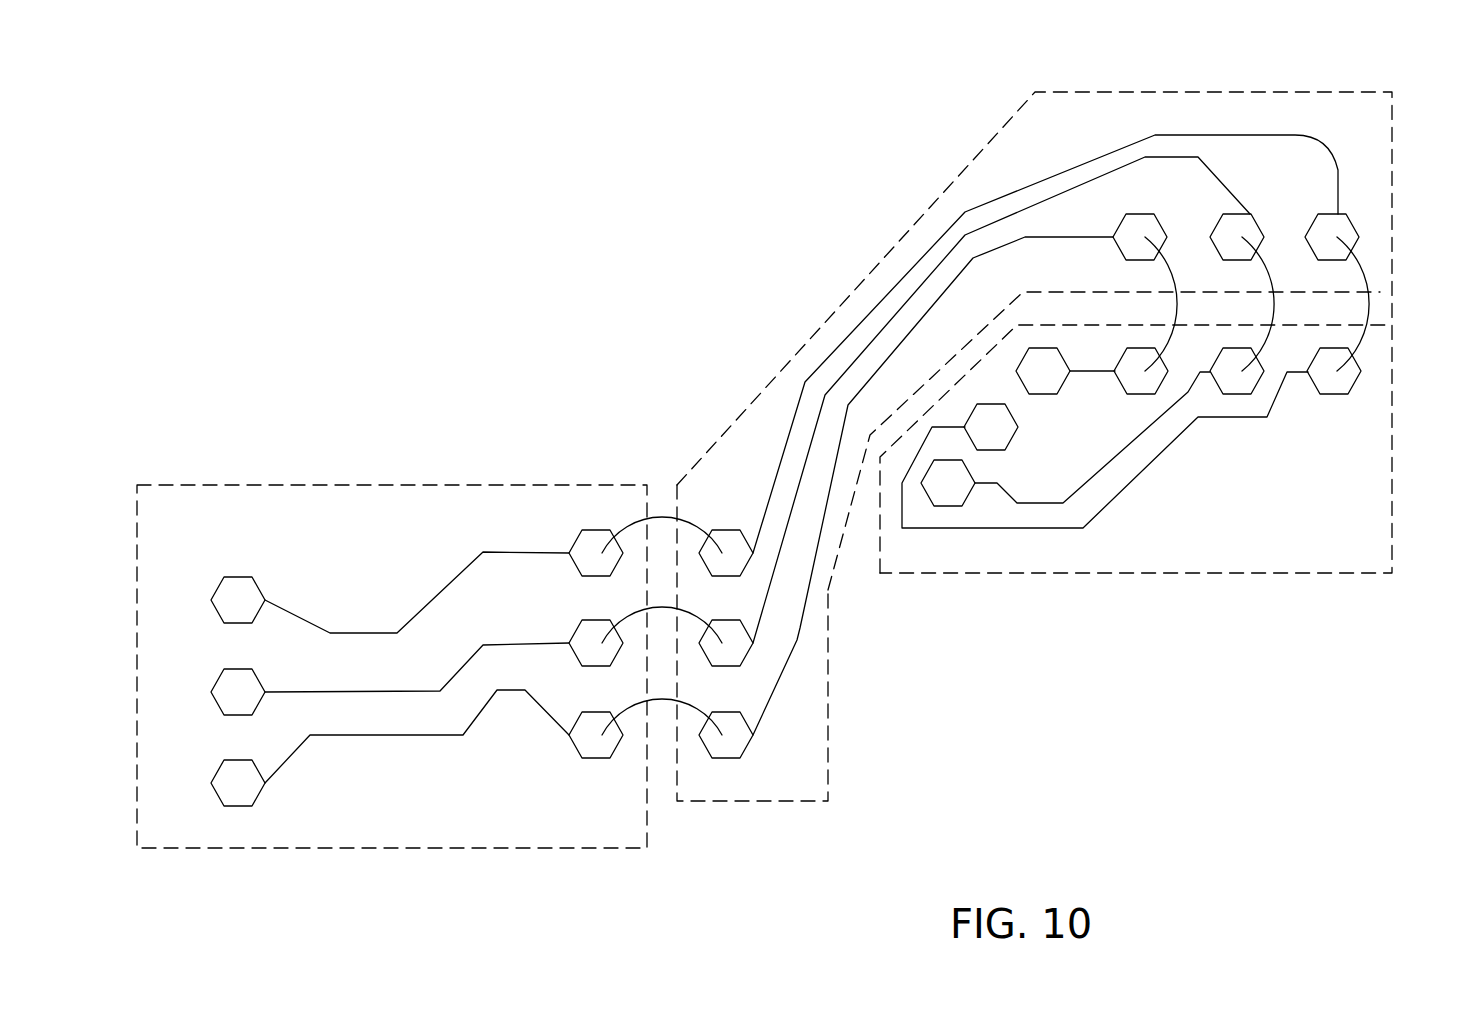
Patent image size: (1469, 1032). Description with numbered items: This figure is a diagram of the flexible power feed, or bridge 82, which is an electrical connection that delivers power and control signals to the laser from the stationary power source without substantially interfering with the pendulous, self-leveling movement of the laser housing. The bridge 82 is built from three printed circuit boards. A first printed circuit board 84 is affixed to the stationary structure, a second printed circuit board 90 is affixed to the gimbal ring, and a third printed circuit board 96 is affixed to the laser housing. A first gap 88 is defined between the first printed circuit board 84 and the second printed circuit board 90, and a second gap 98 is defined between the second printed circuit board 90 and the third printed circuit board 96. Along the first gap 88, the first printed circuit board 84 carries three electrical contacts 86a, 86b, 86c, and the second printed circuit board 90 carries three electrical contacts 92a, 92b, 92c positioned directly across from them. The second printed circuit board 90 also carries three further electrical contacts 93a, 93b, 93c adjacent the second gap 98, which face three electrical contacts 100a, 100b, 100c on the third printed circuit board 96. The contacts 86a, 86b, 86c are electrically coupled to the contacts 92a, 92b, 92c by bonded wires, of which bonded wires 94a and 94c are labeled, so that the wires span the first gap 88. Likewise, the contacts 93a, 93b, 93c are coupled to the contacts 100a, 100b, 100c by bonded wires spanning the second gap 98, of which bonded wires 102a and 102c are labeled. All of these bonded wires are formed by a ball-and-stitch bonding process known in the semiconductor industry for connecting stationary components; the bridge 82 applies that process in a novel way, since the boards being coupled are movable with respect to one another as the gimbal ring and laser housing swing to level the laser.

The flexible power feed or bridge 82 is at (802, 478).
The first printed circuit board 84 is at (367, 827).
The electrical contact 86a is at (580, 746).
The electrical contact 86b is at (580, 655).
The electrical contact 86c is at (580, 565).
The first gap 88 is at (665, 478).
The second printed circuit board 90 is at (965, 190).
The electrical contact 92a is at (745, 748).
The electrical contact 92b is at (745, 655).
The electrical contact 92c is at (745, 565).
The electrical contact 93a is at (1350, 225).
The electrical contact 93b is at (1253, 225).
The electrical contact 93c is at (1158, 225).
The bonded wire 94a is at (658, 700).
The bonded wire 94c is at (655, 517).
The third printed circuit board 96 is at (1017, 548).
The second gap 98 is at (1400, 303).
The electrical contact 100a is at (1328, 383).
The electrical contact 100b is at (1230, 383).
The electrical contact 100c is at (1135, 383).
The bonded wire 102a is at (1370, 318).
The bonded wire 102c is at (1175, 303).